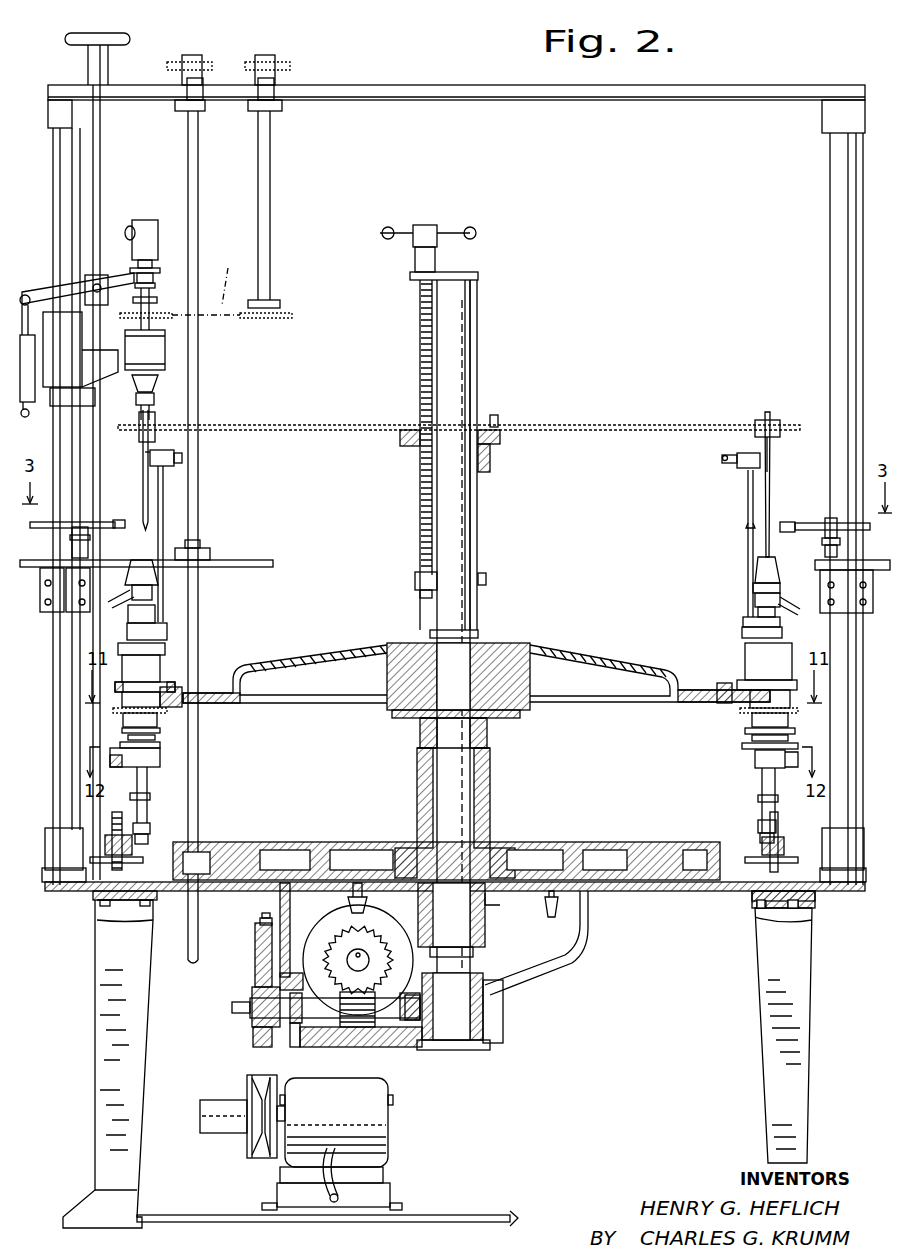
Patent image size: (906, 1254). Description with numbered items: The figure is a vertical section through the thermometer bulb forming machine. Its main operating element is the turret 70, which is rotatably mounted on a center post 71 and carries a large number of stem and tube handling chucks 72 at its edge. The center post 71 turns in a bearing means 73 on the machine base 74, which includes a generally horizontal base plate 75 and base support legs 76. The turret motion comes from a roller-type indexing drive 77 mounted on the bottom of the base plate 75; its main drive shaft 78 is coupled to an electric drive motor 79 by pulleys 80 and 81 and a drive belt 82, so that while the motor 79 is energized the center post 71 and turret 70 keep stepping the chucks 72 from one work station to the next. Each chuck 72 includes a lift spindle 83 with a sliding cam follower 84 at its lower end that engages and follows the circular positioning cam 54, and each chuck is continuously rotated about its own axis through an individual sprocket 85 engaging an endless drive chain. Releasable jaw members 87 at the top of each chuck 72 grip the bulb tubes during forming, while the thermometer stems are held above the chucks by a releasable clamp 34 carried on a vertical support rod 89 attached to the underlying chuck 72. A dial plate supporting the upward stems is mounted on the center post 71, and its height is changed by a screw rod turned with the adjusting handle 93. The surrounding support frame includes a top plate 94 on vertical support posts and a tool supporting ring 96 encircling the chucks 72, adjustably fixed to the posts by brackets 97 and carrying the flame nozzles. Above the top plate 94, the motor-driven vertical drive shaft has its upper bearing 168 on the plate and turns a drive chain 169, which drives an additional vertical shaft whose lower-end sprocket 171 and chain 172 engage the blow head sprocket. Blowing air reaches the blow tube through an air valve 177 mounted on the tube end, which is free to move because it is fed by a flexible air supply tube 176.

The top plate 94 is at (405, 95).
The drive chain 169 is at (228, 70).
The upper bearing 168 is at (180, 108).
The sprocket 171 is at (290, 312).
The chain 172 is at (222, 306).
The air valve 177 is at (158, 222).
The flexible air supply tube 176 is at (130, 228).
The adjusting handle 93 is at (432, 225).
The center post 71 is at (462, 350).
The turret 70 is at (598, 655).
The bearing means 73 is at (490, 738).
The machine base 74 is at (350, 842).
The base plate 75 is at (660, 891).
The releasable clamp 34 is at (150, 456).
The vertical support rod 89 is at (163, 527).
The tool supporting ring 96 is at (262, 560).
The brackets 97 is at (60, 612).
The releasable jaw members 87 is at (152, 582).
The sprocket 85 is at (160, 714).
The lift spindle 83 is at (148, 778).
The sliding cam follower 84 is at (140, 830).
The circular positioning cam 54 is at (120, 848).
The chuck 72 is at (760, 666).
The base support legs 76 is at (138, 995).
The main drive shaft 78 is at (325, 1033).
The roller-type indexing drive 77 is at (236, 1048).
The pulley 81 is at (255, 945).
The drive belt 82 is at (265, 917).
The electric drive motor 79 is at (348, 1118).
The pulley 80 is at (262, 1122).